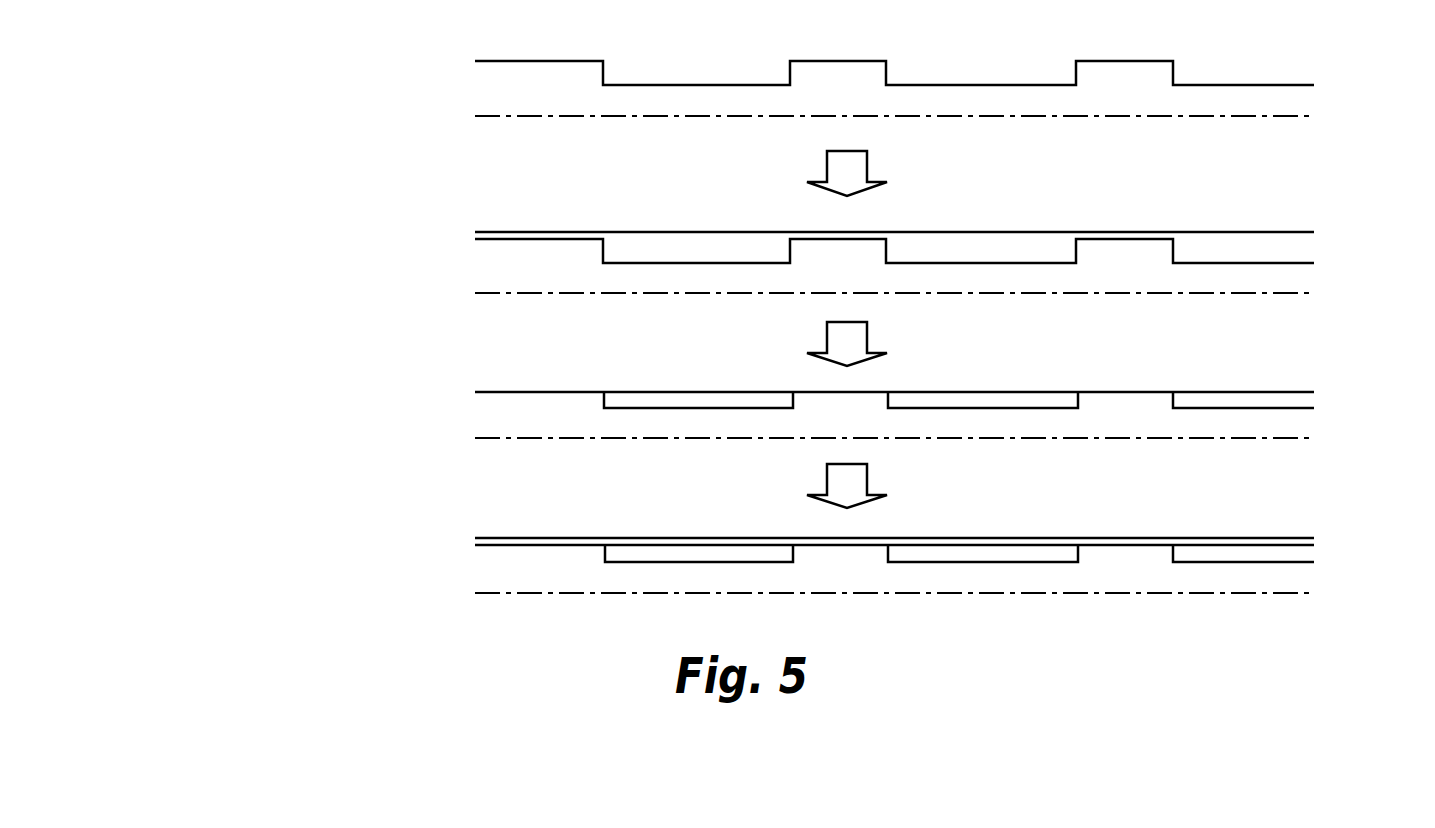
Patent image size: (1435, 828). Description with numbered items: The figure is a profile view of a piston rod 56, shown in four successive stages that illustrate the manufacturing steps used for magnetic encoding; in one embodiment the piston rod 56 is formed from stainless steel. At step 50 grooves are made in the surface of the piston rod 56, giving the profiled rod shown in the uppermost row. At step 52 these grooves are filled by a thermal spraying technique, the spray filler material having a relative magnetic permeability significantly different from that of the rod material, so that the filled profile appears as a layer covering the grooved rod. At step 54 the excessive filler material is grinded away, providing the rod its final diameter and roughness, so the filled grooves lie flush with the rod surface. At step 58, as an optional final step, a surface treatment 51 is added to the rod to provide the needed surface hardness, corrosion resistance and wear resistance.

The groove-making step 50 is at (147, 123).
The surface treatment layer 51 is at (515, 538).
The groove-filling step 52 is at (147, 271).
The grinding step 54 is at (147, 434).
The piston rod 56 is at (1300, 101).
The surface treatment step 58 is at (716, 540).